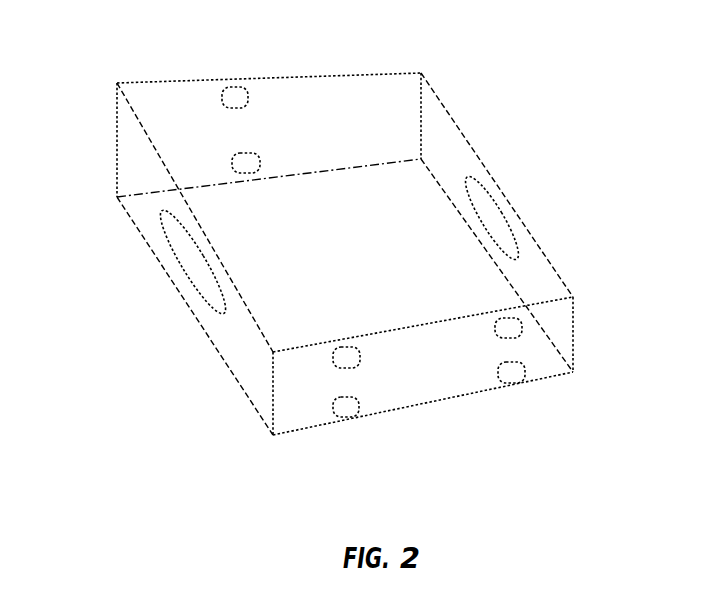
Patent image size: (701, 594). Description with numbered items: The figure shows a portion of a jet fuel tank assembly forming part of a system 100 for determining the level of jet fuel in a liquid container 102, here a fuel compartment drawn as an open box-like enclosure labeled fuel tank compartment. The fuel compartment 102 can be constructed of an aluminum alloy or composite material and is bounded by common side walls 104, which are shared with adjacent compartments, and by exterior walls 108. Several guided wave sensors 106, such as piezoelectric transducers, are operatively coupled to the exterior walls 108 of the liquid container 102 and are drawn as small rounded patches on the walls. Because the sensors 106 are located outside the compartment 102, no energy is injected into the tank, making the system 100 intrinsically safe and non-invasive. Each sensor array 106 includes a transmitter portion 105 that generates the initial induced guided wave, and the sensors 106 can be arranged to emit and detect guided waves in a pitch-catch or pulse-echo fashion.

The system 100 is at (560, 214).
The liquid container 102 is at (557, 261).
The common side wall 104 is at (132, 165).
The transmitter portion 105 is at (468, 383).
The guided wave sensor 106 is at (260, 162).
The exterior wall 108 is at (398, 72).